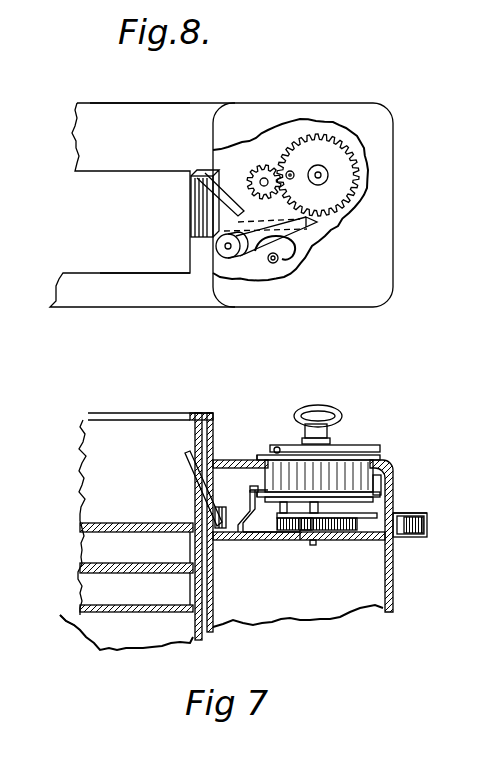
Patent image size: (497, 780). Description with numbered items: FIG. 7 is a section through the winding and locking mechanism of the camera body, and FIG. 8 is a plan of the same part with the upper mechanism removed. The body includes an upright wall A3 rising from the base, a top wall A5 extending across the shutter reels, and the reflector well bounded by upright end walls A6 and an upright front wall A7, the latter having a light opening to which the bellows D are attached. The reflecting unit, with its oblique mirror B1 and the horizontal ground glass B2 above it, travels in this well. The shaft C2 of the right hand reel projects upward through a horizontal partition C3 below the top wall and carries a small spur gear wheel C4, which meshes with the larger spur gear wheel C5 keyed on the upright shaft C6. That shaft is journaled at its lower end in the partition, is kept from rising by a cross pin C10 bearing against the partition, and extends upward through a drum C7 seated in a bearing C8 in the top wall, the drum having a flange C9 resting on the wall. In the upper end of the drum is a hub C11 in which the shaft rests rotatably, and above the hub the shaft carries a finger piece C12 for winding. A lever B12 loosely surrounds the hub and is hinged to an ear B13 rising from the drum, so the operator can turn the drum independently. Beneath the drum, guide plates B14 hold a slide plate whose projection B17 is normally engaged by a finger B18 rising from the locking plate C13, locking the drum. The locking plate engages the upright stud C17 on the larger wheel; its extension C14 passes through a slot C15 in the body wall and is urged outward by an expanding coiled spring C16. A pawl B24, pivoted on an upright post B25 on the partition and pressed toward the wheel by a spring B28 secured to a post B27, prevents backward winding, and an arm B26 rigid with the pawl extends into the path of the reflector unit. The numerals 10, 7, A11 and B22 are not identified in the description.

In FIG. 8, the top wall A5 is at (107, 113).
In FIG. 7, the top wall A5 is at (381, 536).
In FIG. 8, the bellows D is at (95, 171).
In FIG. 7, the bellows D is at (0, 650).
In FIG. 8, the upright front wall A7 is at (95, 293).
In FIG. 8, the shaft C2 is at (266, 170).
In FIG. 8, the horizontal partition C3 is at (250, 172).
In FIG. 7, the horizontal partition C3 is at (302, 540).
In FIG. 8, the small spur gear wheel C4 is at (253, 177).
In FIG. 8, the larger spur gear wheel C5 is at (335, 192).
In FIG. 7, the larger spur gear wheel C5 is at (385, 530).
In FIG. 8, the upright shaft C6 is at (326, 175).
In FIG. 7, the upright shaft C6 is at (340, 505).
In FIG. 8, the upright stud C17 is at (292, 172).
In FIG. 7, the upright stud C17 is at (366, 480).
In FIG. 8, the pawl B24 is at (316, 224).
In FIG. 7, the pawl B24 is at (320, 544).
In FIG. 8, the upright post B25 is at (226, 250).
In FIG. 7, the upright post B25 is at (221, 522).
In FIG. 8, the arm B26 is at (189, 192).
In FIG. 7, the arm B26 is at (188, 473).
In FIG. 8, the post B27 is at (276, 261).
In FIG. 8, the spring B28 is at (293, 252).
In FIG. 7, the casing 10 is at (106, 450).
In FIG. 7, the panel 7 is at (96, 595).
In FIG. 7, the mirror B1 is at (98, 583).
In FIG. 7, the ground glass B2 is at (97, 530).
In FIG. 7, the upright wall A3 is at (212, 584).
In FIG. 7, the upright end wall A6 is at (197, 625).
In FIG. 7, the base A11 is at (133, 630).
In FIG. 7, the lever B12 is at (362, 442).
In FIG. 7, the ear B13 is at (277, 447).
In FIG. 7, the guide plates B14 is at (355, 493).
In FIG. 7, the projection B17 is at (238, 460).
In FIG. 7, the finger B18 is at (253, 458).
In FIG. 7, the lug B22 is at (378, 498).
In FIG. 7, the drum C7 is at (372, 466).
In FIG. 7, the bearing C8 is at (268, 453).
In FIG. 7, the flange C9 is at (258, 453).
In FIG. 7, the cross pin C10 is at (313, 545).
In FIG. 7, the hub C11 is at (297, 447).
In FIG. 7, the finger piece C12 is at (338, 410).
In FIG. 7, the locking plate C13 is at (407, 537).
In FIG. 7, the extension C14 is at (423, 527).
In FIG. 7, the slot C15 is at (425, 520).
In FIG. 7, the expanding coiled spring C16 is at (398, 522).